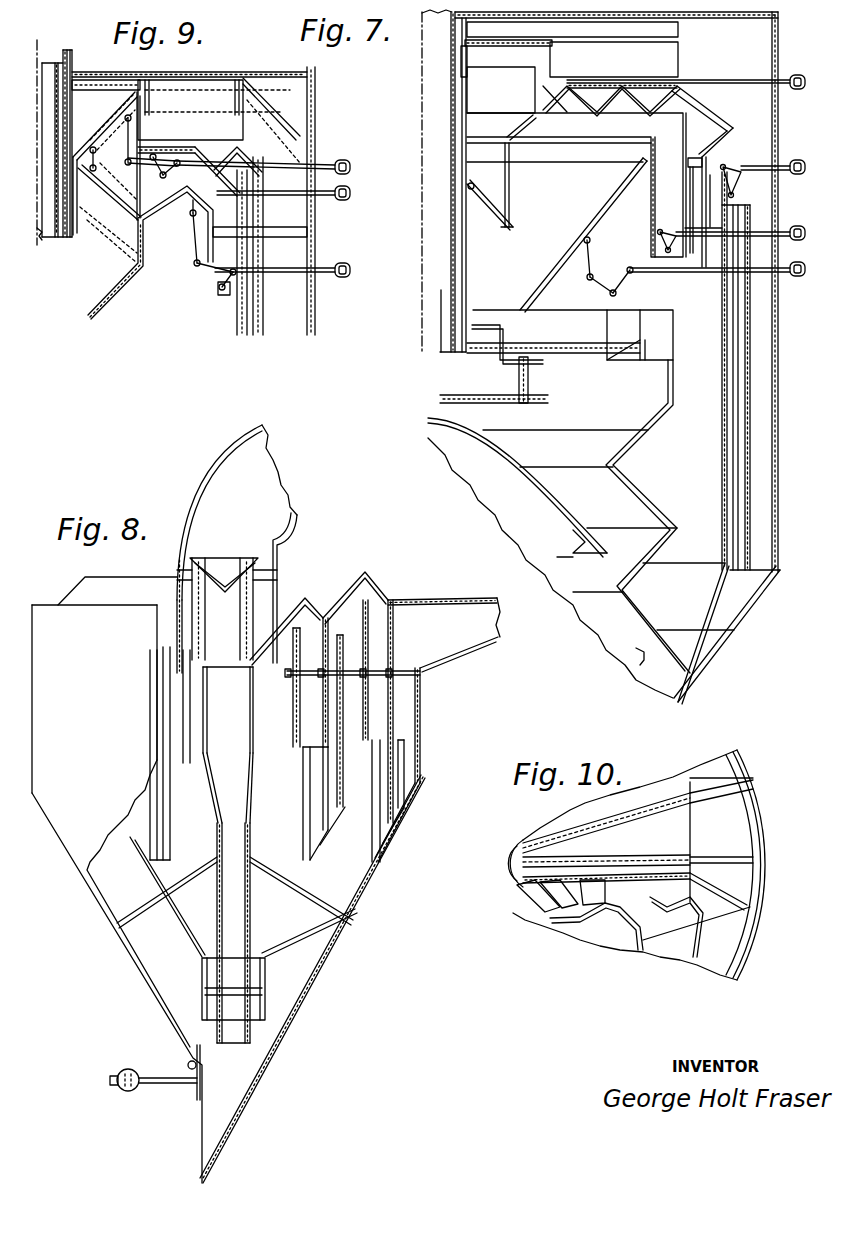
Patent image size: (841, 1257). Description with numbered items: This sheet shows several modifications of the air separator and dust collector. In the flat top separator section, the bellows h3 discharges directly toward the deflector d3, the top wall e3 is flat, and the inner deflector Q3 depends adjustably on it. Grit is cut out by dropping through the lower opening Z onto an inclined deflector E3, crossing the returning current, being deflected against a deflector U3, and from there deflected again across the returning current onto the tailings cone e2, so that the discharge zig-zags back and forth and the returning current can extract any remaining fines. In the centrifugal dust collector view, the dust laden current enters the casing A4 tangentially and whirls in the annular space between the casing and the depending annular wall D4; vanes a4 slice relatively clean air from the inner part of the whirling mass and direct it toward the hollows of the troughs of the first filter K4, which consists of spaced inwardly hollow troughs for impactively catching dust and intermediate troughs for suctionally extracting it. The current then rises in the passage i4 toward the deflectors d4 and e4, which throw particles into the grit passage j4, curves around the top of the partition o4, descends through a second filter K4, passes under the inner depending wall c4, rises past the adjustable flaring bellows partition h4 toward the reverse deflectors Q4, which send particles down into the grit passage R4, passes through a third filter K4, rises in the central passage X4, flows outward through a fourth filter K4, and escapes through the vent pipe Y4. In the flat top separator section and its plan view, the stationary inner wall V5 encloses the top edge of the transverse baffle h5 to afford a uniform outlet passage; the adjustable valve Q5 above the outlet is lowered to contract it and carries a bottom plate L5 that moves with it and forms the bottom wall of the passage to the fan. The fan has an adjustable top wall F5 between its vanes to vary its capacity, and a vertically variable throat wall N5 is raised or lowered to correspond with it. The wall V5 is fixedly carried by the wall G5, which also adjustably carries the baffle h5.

In FIG. 9, the adjustable valve Q5 is at (130, 110).
In FIG. 10, the adjustable valve Q5 is at (559, 894).
In FIG. 9, the adjustable top wall of the fan F5 is at (183, 88).
In FIG. 10, the adjustable top wall of the fan F5 is at (643, 856).
In FIG. 9, the stationary inner wall V5 is at (158, 176).
In FIG. 10, the stationary inner wall V5 is at (594, 893).
In FIG. 9, the bottom plate L5 is at (109, 194).
In FIG. 10, the bottom plate L5 is at (533, 897).
In FIG. 9, the vertically variable throat wall N5 is at (108, 235).
In FIG. 10, the vertically variable throat wall N5 is at (538, 896).
In FIG. 9, the transverse wall or baffle h5 is at (122, 279).
In FIG. 10, the transverse wall or baffle h5 is at (577, 918).
In FIG. 9, the wall G5 is at (240, 297).
In FIG. 10, the wall G5 is at (696, 927).
In FIG. 7, the top wall e3 is at (670, 75).
In FIG. 7, the deflector d3 is at (638, 177).
In FIG. 7, the inner deflector Q3 is at (516, 135).
In FIG. 7, the bellows h3 is at (600, 215).
In FIG. 7, the lower opening Z is at (586, 516).
In FIG. 7, the inclined deflector E3 is at (561, 512).
In FIG. 7, the deflector U3 is at (647, 570).
In FIG. 7, the tailings cone e2 is at (638, 650).
In FIG. 8, the vent pipe Y4 is at (237, 549).
In FIG. 8, the reverse deflectors Q4 is at (296, 608).
In FIG. 8, the deflector e4 is at (342, 584).
In FIG. 8, the deflector d4 is at (378, 583).
In FIG. 8, the central passage X4 is at (243, 618).
In FIG. 8, the filter K4 is at (427, 743).
In FIG. 8, the partition o4 is at (340, 640).
In FIG. 8, the grit passage R4 is at (311, 668).
In FIG. 8, the inner depending wall c4 is at (290, 712).
In FIG. 8, the passage i4 is at (332, 682).
In FIG. 8, the grit passage j4 is at (374, 670).
In FIG. 8, the depending annular wall D4 is at (390, 722).
In FIG. 8, the casing A4 is at (418, 716).
In FIG. 8, the vanes a4 is at (408, 780).
In FIG. 8, the adjustable flaring bellows partition h4 is at (254, 797).